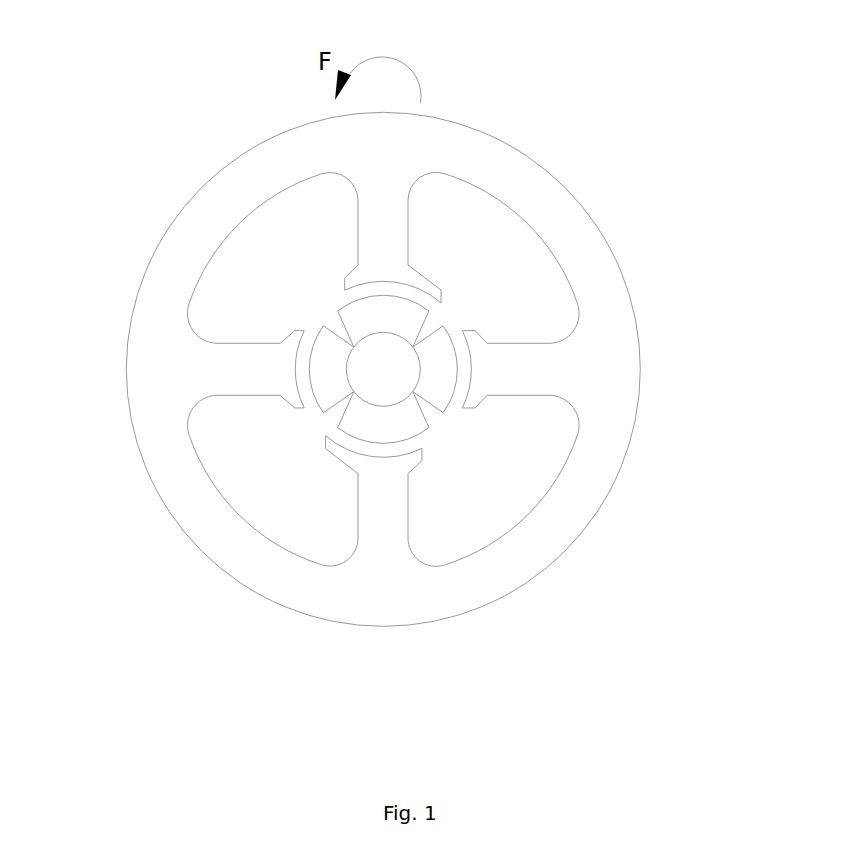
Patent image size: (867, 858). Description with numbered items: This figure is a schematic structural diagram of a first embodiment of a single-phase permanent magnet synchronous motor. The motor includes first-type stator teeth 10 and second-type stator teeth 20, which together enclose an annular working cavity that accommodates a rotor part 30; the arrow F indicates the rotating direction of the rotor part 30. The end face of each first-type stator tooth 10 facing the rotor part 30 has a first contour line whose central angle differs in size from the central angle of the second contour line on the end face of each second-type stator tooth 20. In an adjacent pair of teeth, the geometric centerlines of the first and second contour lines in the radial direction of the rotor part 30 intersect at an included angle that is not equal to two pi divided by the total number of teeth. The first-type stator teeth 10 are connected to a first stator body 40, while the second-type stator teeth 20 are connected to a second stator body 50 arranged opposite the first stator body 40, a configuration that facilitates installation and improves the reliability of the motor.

The first-type stator teeth 10 is at (389, 268).
The second-type stator teeth 20 is at (290, 378).
The rotor part 30 is at (325, 327).
The first stator body 40 is at (222, 179).
The second stator body 50 is at (140, 378).